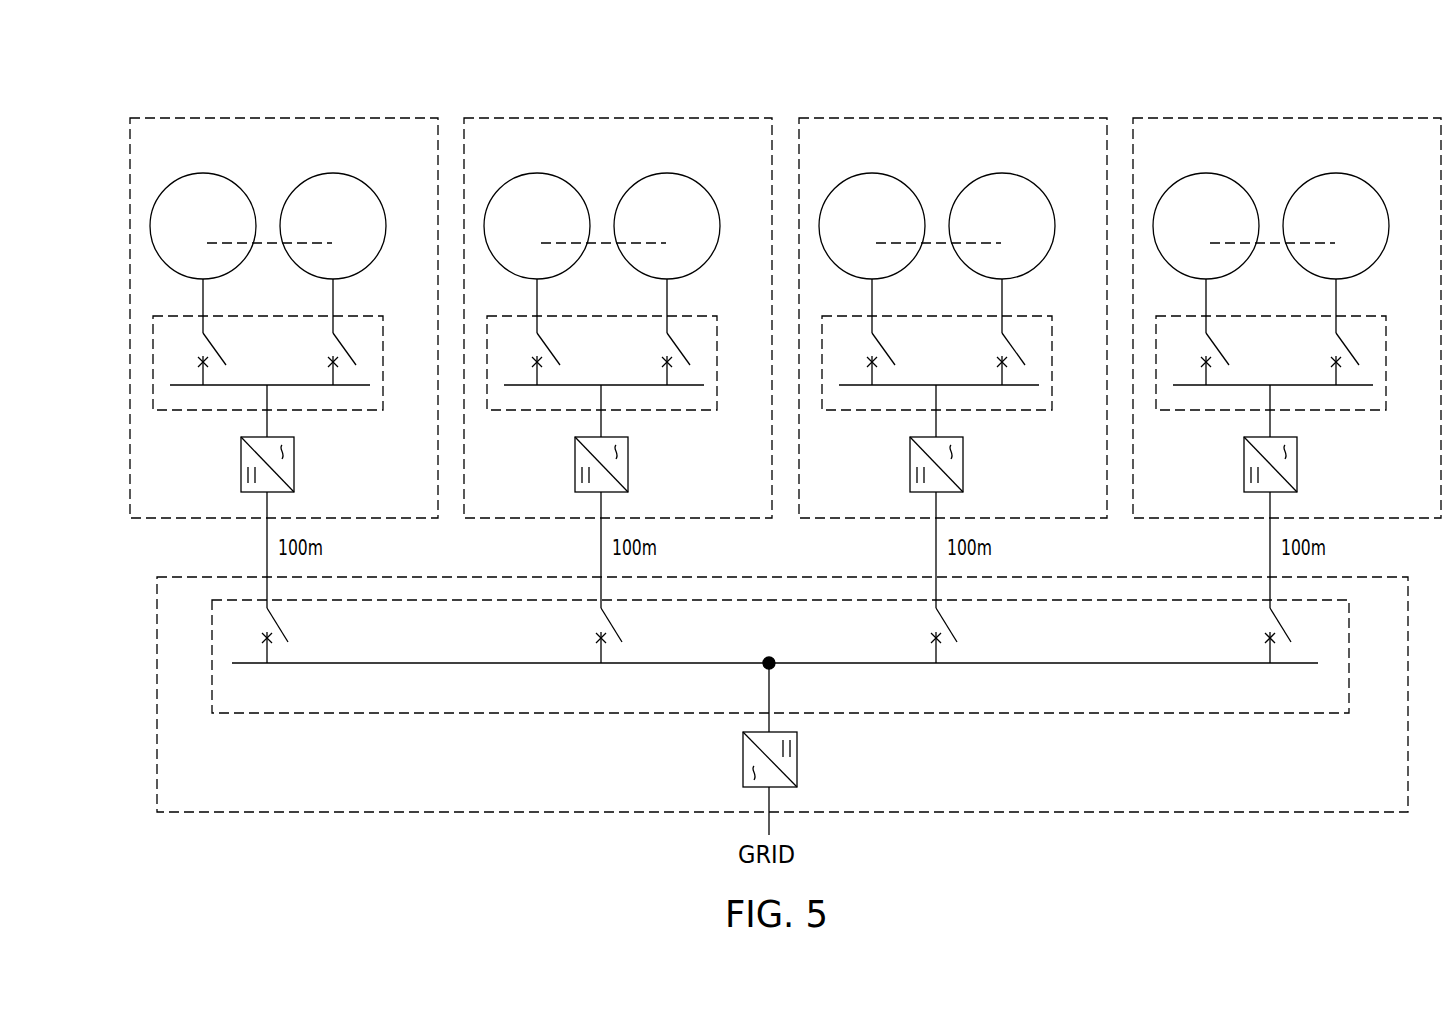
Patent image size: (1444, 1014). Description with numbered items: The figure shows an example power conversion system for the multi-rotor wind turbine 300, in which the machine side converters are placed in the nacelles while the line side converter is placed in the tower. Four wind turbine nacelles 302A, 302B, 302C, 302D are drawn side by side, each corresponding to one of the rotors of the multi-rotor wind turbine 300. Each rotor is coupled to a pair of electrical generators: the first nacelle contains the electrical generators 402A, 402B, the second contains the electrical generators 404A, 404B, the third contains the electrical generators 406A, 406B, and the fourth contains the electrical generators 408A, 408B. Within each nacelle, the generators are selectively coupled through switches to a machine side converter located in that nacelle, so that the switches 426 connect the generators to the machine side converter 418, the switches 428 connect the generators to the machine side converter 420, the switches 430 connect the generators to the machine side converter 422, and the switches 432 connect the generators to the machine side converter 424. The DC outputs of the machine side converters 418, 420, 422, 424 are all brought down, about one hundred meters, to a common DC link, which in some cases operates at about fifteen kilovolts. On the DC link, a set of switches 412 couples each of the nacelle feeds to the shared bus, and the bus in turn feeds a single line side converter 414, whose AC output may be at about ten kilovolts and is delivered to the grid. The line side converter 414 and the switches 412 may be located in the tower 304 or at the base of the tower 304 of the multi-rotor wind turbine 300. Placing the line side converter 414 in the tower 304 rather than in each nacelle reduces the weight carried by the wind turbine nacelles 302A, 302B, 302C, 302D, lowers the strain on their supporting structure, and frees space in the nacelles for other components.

The multi-rotor wind turbine 300 is at (187, 65).
The wind turbine nacelle 302A is at (292, 117).
The wind turbine nacelle 302B is at (626, 117).
The wind turbine nacelle 302C is at (961, 117).
The wind turbine nacelle 302D is at (1295, 117).
The tower 304 is at (1117, 812).
The electrical generator 402A is at (213, 174).
The electrical generator 402B is at (338, 174).
The electrical generator 404A is at (547, 174).
The electrical generator 404B is at (672, 174).
The electrical generator 406A is at (882, 174).
The electrical generator 406B is at (1007, 174).
The electrical generator 408A is at (1216, 174).
The electrical generator 408B is at (1341, 174).
The switches 412 is at (513, 713).
The line side converter 414 is at (797, 763).
The machine side converter 418 is at (294, 461).
The machine side converter 420 is at (628, 461).
The machine side converter 422 is at (963, 461).
The machine side converter 424 is at (1297, 461).
The switches 426 is at (269, 316).
The switches 428 is at (603, 316).
The switches 430 is at (938, 316).
The switches 432 is at (1272, 316).